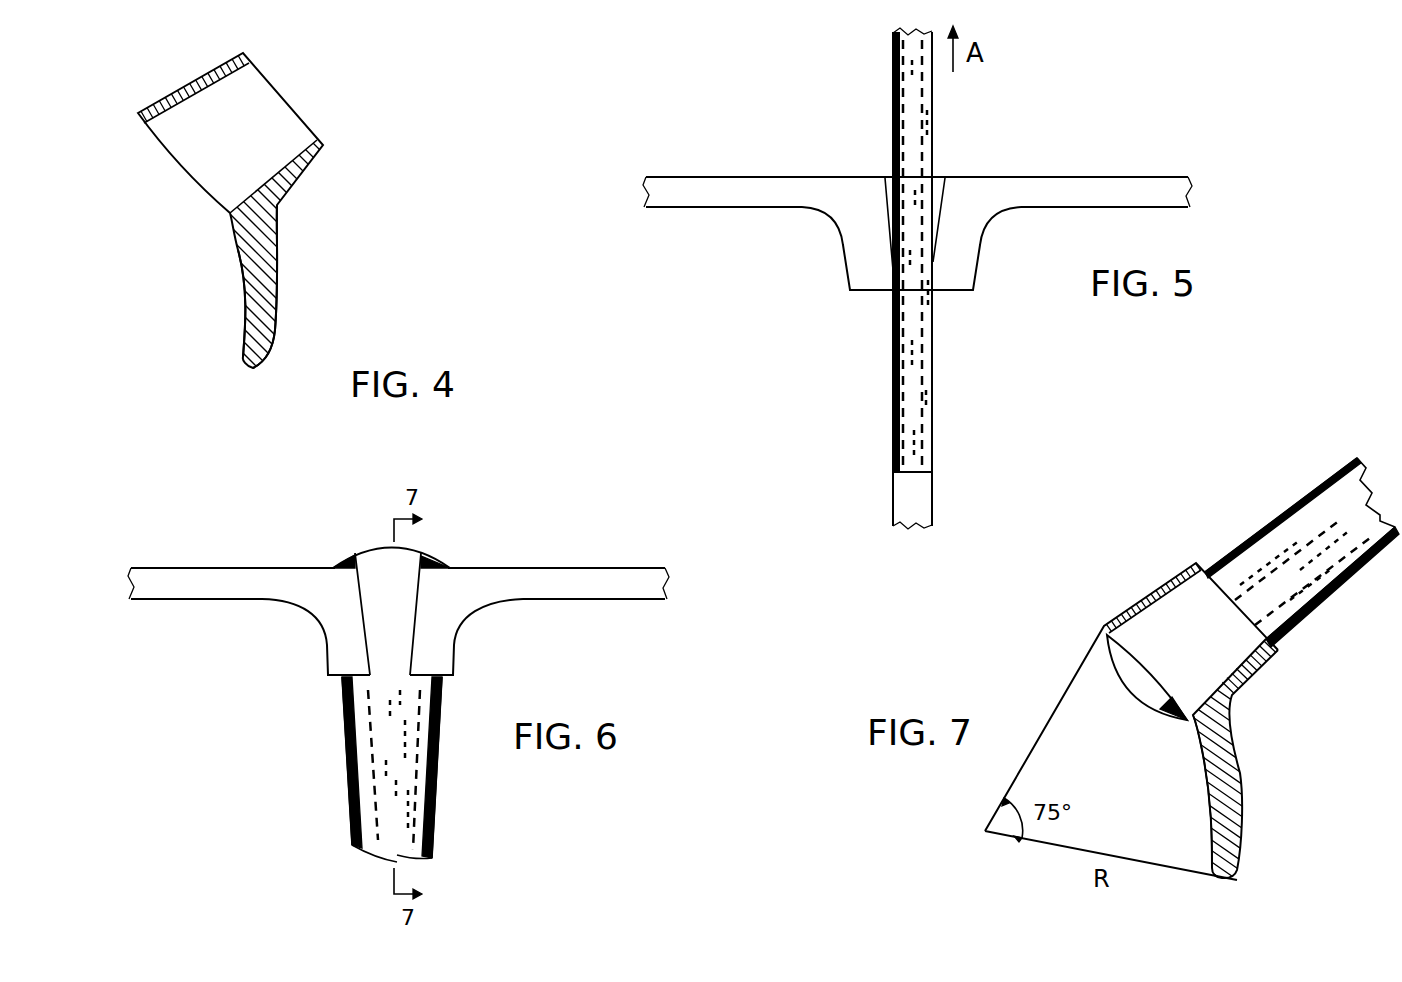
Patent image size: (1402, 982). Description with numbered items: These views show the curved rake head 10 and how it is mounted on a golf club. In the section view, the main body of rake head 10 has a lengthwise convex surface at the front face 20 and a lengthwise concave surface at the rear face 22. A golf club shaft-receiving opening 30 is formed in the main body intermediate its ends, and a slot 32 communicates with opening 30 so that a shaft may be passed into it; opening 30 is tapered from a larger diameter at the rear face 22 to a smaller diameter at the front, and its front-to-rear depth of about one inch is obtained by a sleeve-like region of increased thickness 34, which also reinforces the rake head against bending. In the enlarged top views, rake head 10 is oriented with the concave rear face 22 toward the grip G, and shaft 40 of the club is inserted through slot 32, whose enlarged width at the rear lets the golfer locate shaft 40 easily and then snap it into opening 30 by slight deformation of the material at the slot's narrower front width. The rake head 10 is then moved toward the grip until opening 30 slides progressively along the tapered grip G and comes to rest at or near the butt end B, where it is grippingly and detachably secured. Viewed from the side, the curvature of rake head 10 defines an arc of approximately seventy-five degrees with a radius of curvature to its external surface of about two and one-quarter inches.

In FIG. 4, the rake head 10 is at (238, 250).
In FIG. 5, the rake head 10 is at (1120, 190).
In FIG. 6, the rake head 10 is at (223, 578).
In FIG. 7, the rake head 10 is at (1111, 612).
In FIG. 4, the front face 20 is at (277, 333).
In FIG. 5, the front face 20 is at (727, 210).
In FIG. 6, the front face 20 is at (182, 604).
In FIG. 7, the front face 20 is at (1244, 811).
In FIG. 4, the rear face 22 is at (247, 303).
In FIG. 5, the rear face 22 is at (713, 176).
In FIG. 6, the rear face 22 is at (172, 567).
In FIG. 7, the rear face 22 is at (1205, 772).
In FIG. 4, the golf club shaft-receiving opening 30 is at (224, 82).
In FIG. 7, the golf club shaft-receiving opening 30 is at (1145, 603).
In FIG. 5, the slot 32 is at (888, 177).
In FIG. 6, the slot 32 is at (412, 648).
In FIG. 4, the area of increased thickness 34 is at (275, 212).
In FIG. 5, the shaft 40 is at (926, 355).
In FIG. 6, the butt end B is at (356, 560).
In FIG. 7, the butt end B is at (1124, 675).
In FIG. 6, the grip G is at (438, 780).
In FIG. 7, the grip G is at (1320, 587).